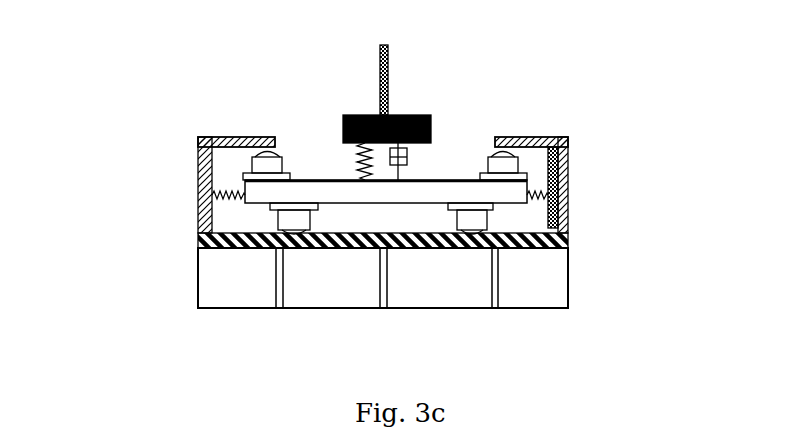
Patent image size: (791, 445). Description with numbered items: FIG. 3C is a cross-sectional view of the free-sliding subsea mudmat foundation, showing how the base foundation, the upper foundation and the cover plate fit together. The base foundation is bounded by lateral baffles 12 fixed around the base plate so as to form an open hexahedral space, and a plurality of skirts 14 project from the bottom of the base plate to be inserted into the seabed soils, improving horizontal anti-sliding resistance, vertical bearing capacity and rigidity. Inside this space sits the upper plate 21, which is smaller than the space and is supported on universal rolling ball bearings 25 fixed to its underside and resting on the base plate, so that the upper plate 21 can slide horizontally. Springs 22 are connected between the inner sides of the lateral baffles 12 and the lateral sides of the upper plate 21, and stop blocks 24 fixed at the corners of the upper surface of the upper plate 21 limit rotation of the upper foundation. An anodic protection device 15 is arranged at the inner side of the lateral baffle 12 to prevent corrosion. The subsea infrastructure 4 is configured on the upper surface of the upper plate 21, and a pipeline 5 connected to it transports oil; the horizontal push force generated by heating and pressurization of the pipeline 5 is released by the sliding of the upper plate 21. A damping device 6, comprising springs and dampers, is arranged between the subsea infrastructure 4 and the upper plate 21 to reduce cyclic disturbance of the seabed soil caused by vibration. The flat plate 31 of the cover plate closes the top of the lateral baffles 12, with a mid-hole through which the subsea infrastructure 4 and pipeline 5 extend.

The subsea infrastructure 4 is at (353, 113).
The pipeline 5 is at (378, 78).
The damping device 6 is at (357, 165).
The lateral baffle 12 is at (198, 200).
The skirt 14 is at (498, 290).
The anodic protection device 15 is at (553, 208).
The upper plate 21 is at (297, 172).
The spring 22 is at (227, 203).
The stop block 24 is at (530, 160).
The universal rolling ball bearing 25 is at (317, 247).
The flat plate 31 is at (215, 137).